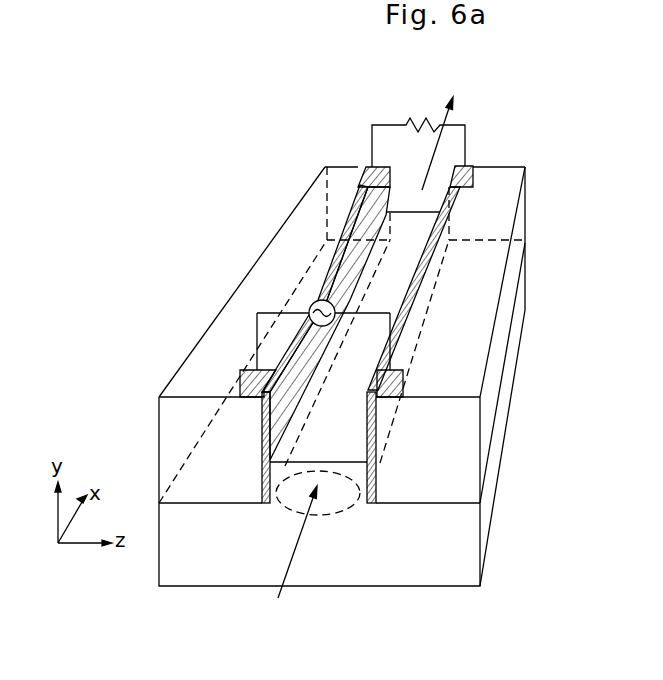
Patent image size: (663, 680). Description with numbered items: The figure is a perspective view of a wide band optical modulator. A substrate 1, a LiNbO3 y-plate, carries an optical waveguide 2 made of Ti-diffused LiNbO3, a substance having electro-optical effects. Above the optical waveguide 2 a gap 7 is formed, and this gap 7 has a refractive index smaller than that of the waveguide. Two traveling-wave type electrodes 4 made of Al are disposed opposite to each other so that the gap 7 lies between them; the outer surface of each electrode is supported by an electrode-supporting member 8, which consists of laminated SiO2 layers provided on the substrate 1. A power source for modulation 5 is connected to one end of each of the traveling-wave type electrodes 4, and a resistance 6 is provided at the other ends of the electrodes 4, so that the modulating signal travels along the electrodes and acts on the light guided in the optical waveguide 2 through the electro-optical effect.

The substrate 1 is at (364, 559).
The optical waveguide 2 is at (339, 503).
The traveling-wave type electrodes 4 is at (330, 280).
The power source for modulation 5 is at (312, 303).
The resistance 6 is at (412, 122).
The gap 7 is at (341, 415).
The electrode-supporting members 8 is at (305, 212).